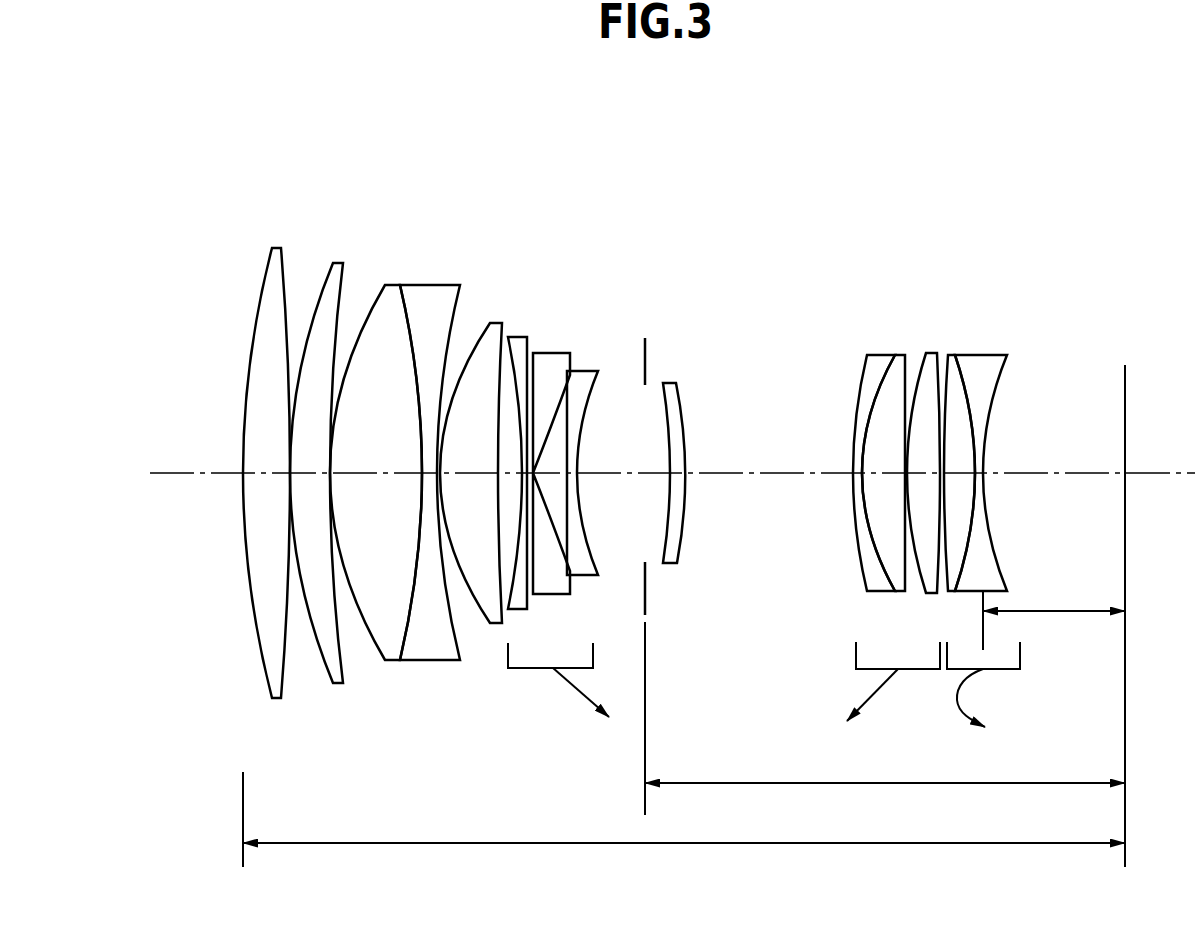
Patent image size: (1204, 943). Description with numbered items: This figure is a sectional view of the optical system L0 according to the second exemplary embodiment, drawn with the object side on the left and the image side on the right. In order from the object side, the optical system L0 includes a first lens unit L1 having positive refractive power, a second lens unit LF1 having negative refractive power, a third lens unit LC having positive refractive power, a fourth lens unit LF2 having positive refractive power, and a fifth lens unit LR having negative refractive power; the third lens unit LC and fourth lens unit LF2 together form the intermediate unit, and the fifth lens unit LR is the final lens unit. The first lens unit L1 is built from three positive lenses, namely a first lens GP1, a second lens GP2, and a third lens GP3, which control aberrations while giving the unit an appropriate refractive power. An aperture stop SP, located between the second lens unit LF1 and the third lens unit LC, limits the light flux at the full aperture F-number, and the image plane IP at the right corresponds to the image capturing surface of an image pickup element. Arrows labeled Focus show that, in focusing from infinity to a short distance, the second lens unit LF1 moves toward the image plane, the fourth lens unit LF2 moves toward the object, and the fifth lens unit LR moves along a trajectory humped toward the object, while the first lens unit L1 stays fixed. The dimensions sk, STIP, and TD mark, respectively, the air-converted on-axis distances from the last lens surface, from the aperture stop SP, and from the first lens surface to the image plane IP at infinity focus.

The optical system L0 is at (1007, 120).
The first lens unit L1 is at (498, 177).
The first lens GP1 is at (277, 247).
The second lens GP2 is at (340, 263).
The third lens GP3 is at (394, 285).
The second lens unit LF1 is at (598, 177).
The aperture stop SP is at (648, 345).
The third lens unit LC is at (688, 177).
The fourth lens unit LF2 is at (912, 177).
The fifth lens unit LR is at (1007, 177).
The image plane IP is at (1128, 390).
The distance from last lens surface to image plane sk is at (1054, 621).
The distance from aperture stop to image plane STIP is at (885, 799).
The distance from first lens surface to image plane TD is at (684, 824).